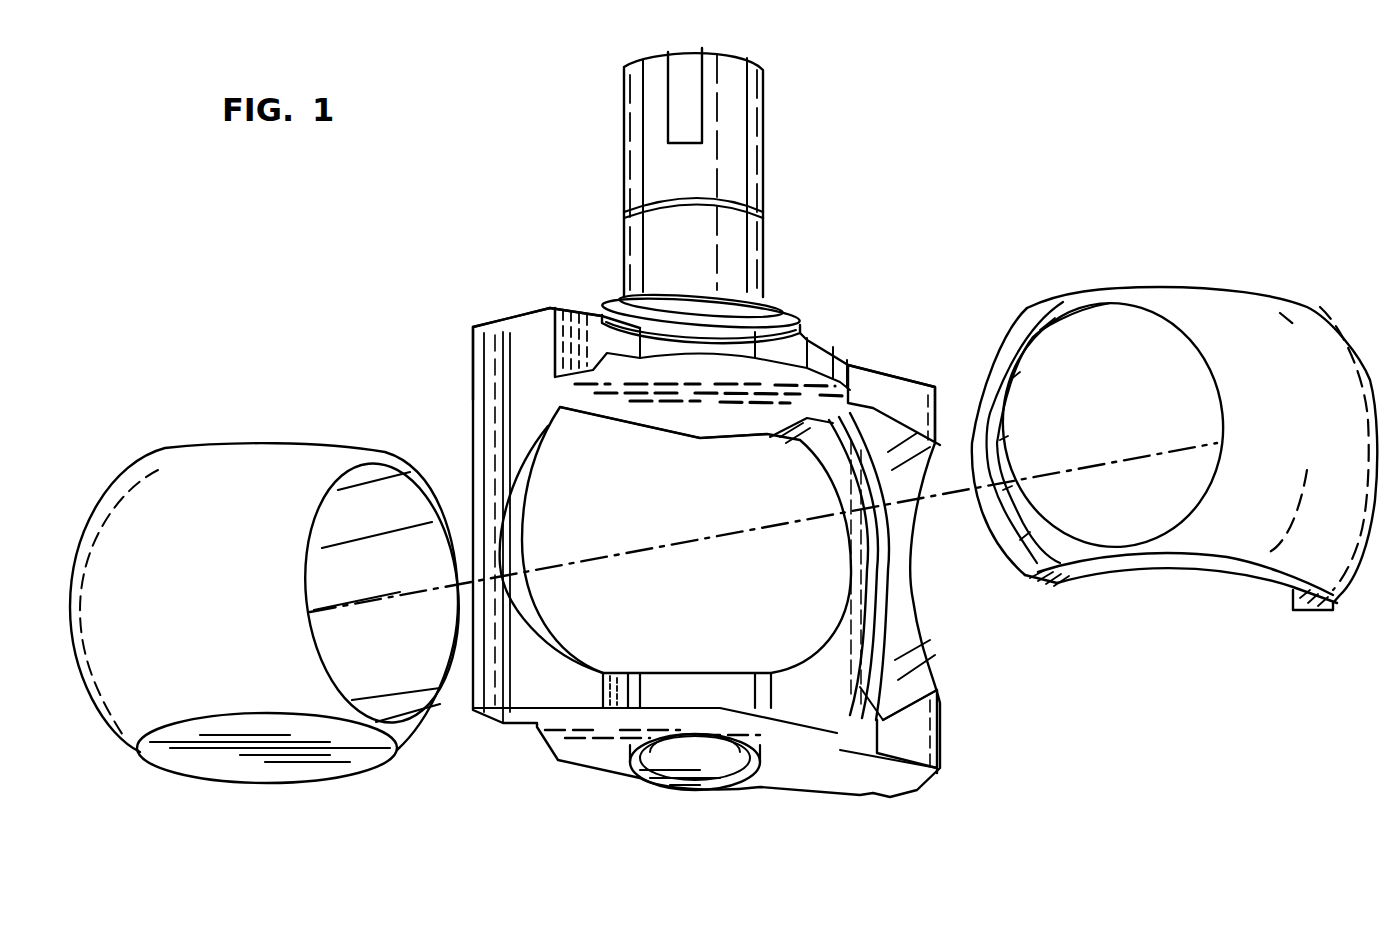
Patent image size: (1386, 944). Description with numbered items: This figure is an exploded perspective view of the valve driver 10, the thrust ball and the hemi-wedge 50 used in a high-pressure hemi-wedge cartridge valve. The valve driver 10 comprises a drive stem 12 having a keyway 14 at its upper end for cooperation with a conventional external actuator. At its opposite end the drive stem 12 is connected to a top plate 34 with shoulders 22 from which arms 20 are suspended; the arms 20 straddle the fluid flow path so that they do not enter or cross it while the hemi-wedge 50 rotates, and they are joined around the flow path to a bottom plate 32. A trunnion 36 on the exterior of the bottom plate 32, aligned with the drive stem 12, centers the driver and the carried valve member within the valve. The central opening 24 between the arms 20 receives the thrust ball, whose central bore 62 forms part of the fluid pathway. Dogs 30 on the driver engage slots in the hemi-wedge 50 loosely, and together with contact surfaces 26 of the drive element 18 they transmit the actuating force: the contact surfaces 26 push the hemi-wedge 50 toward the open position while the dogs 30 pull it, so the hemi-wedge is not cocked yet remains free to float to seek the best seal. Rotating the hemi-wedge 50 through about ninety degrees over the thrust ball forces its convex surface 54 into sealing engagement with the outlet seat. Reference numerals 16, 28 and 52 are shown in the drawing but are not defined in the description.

The valve driver 10 is at (893, 256).
The drive stem 12 is at (753, 130).
The keyway 14 is at (678, 97).
The shaft base 16 is at (747, 297).
The drive element 18 is at (797, 323).
The arms 20 is at (485, 437).
The shoulders 22 is at (515, 330).
The central opening 24 is at (855, 563).
The contact surfaces 26 is at (520, 508).
The lower corner block 28 is at (925, 655).
The dogs 30 is at (835, 452).
The bottom plate 32 is at (693, 688).
The top plate 34 is at (664, 415).
The trunnion 36 is at (665, 772).
The hemi-wedge 50 is at (212, 490).
The cap rim 52 is at (1003, 422).
The convex surface 54 is at (1250, 395).
The central bore 62 is at (382, 470).